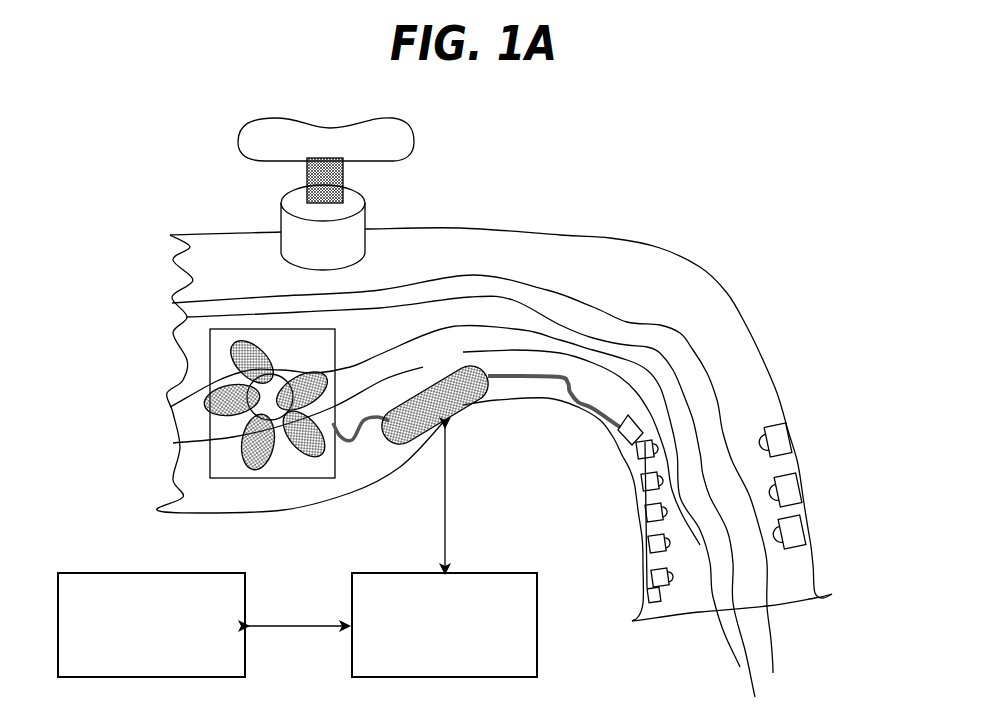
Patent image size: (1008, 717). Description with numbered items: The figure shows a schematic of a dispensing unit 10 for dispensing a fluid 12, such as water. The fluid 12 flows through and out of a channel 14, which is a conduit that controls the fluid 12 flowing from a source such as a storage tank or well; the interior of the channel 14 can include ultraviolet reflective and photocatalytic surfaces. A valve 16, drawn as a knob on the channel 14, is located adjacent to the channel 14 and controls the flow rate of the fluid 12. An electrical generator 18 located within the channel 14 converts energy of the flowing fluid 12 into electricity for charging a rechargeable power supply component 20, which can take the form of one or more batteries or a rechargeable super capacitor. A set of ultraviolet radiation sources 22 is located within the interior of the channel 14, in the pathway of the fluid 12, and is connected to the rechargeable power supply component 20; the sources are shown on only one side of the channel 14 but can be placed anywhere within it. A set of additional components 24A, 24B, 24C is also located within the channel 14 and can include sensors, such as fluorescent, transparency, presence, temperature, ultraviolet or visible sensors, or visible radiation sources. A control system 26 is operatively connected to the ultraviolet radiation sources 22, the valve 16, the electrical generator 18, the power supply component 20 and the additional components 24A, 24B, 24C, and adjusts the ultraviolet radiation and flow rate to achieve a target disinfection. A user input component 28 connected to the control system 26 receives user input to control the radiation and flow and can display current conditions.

The dispensing unit 10 is at (140, 146).
The fluid 12 is at (470, 273).
The channel 14 is at (707, 270).
The valve 16 is at (264, 124).
The electrical generator 18 is at (252, 462).
The rechargeable power supply component 20 is at (460, 408).
The set of ultraviolet radiation sources 22 is at (638, 487).
The additional component 24A is at (773, 437).
The additional component 24B is at (790, 485).
The additional component 24C is at (799, 538).
The control system 26 is at (430, 671).
The user input component 28 is at (138, 671).